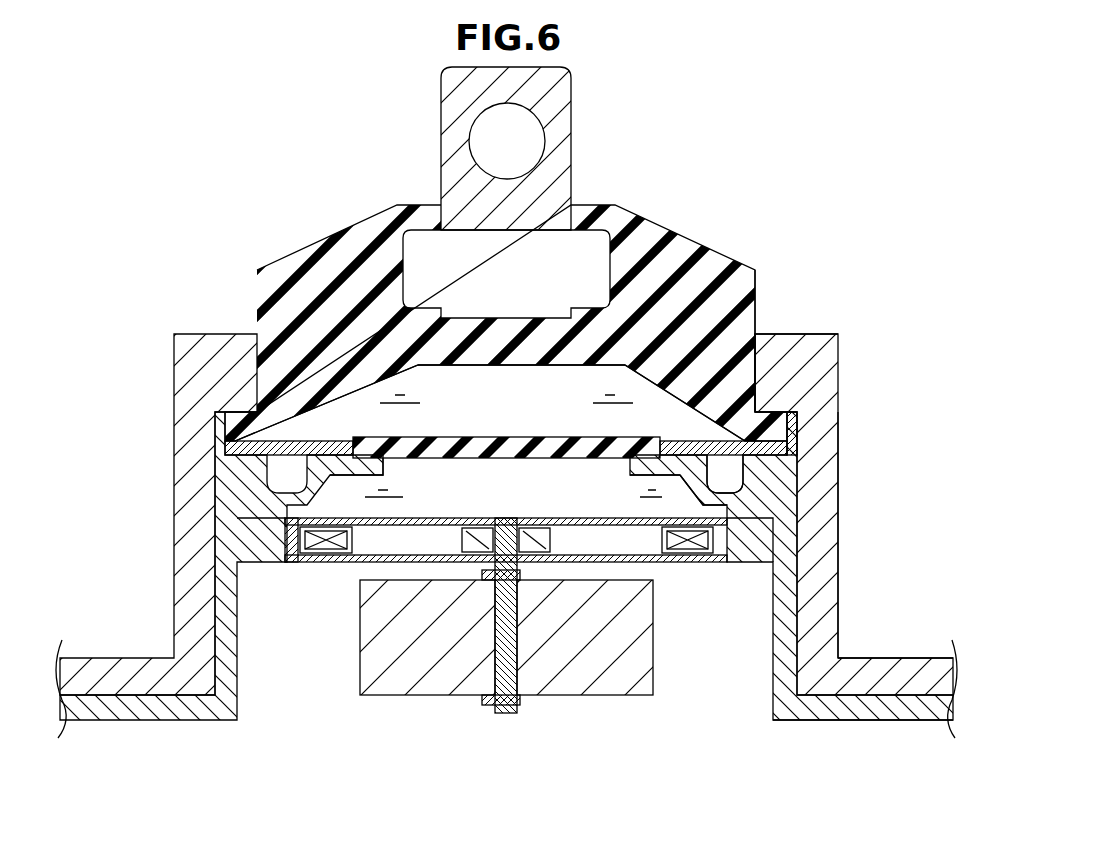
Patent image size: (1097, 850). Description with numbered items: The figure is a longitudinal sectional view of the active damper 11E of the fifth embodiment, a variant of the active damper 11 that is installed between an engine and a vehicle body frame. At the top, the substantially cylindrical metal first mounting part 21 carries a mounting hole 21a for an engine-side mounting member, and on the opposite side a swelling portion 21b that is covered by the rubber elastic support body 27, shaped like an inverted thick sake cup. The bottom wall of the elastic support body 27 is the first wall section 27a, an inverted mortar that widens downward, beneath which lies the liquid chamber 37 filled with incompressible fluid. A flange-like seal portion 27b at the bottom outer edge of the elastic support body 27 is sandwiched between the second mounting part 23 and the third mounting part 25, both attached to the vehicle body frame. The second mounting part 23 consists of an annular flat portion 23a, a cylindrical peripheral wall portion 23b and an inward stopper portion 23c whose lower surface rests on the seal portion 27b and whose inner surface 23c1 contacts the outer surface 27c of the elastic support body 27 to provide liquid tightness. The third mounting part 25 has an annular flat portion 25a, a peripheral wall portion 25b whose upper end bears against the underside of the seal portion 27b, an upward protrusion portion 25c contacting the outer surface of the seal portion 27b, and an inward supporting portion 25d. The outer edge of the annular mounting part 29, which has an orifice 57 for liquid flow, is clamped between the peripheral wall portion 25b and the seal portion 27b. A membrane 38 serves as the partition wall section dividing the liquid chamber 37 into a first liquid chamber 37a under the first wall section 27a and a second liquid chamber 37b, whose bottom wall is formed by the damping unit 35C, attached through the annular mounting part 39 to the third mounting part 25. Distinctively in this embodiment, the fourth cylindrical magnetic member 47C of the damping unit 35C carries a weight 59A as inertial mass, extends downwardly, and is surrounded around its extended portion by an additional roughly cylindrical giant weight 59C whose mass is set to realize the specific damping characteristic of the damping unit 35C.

The active damper 11E is at (552, 425).
The active damper 11 is at (862, 113).
The first mounting part 21 is at (565, 138).
The mounting hole 21a is at (487, 118).
The swelling portion 21b is at (590, 273).
The second mounting part 23 is at (843, 381).
The flat portion 23a is at (893, 670).
The peripheral wall portion 23b is at (822, 478).
The stopper portion 23c is at (782, 372).
The inner surface 23c1 is at (781, 409).
The third mounting part 25 is at (774, 685).
The flat portion 25a is at (860, 718).
The peripheral wall portion 25b is at (768, 492).
The protrusion portion 25c is at (796, 422).
The supporting portion 25d is at (652, 462).
The elastic support body 27 is at (712, 259).
The first wall section 27a is at (417, 369).
The seal portion 27b is at (792, 447).
The outer surface 27c is at (757, 320).
The annular mounting part 29 is at (762, 452).
The damping unit 35C is at (343, 577).
The liquid chamber 37 is at (472, 411).
The first liquid chamber 37a is at (577, 411).
The second liquid chamber 37b is at (577, 509).
The membrane 38 is at (425, 458).
The annular mounting part 39 is at (748, 555).
The fourth cylindrical magnetic member 47C is at (506, 656).
The orifice 57 is at (268, 441).
The weight 59A is at (463, 540).
The additional giant weight 59C is at (589, 684).